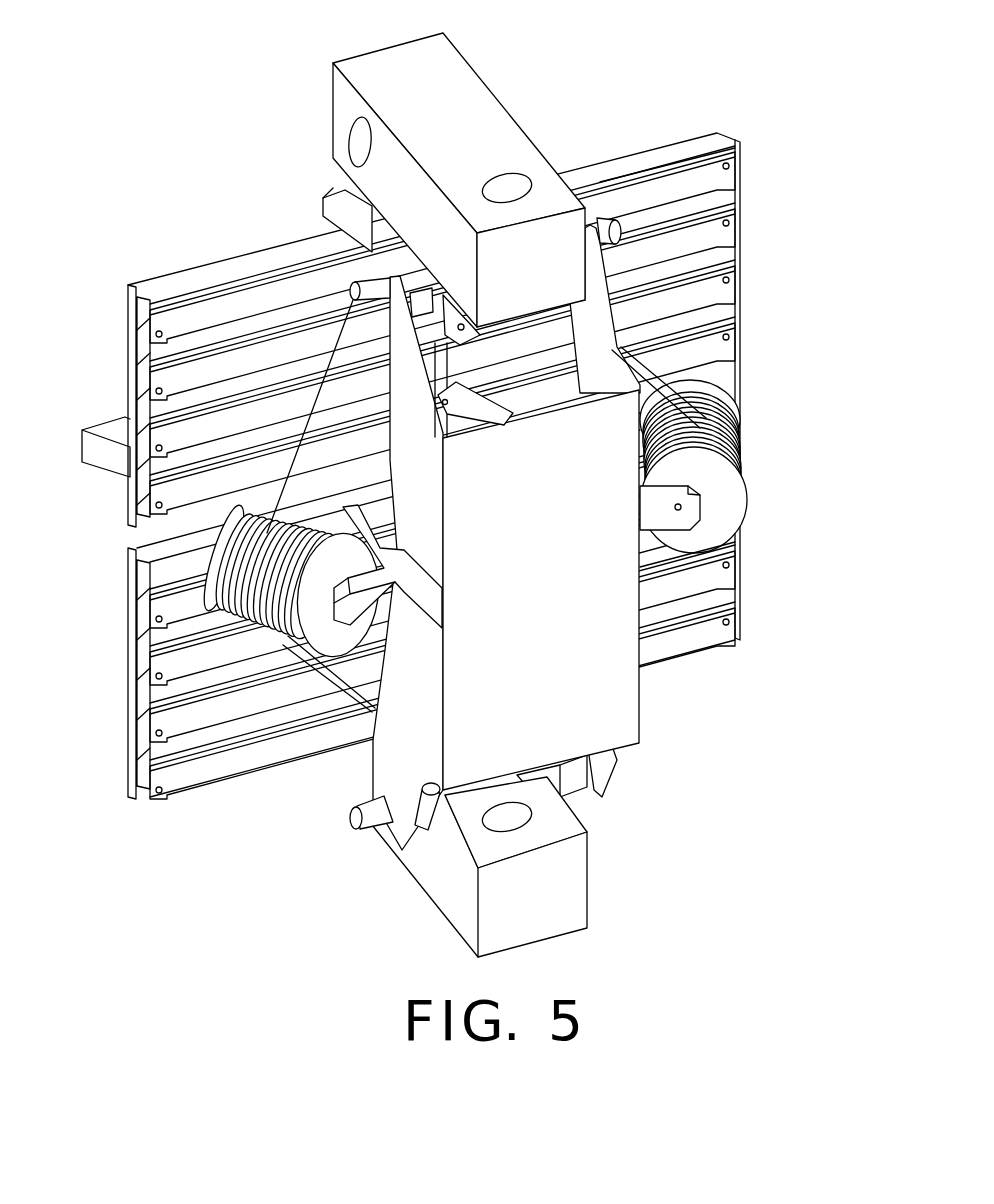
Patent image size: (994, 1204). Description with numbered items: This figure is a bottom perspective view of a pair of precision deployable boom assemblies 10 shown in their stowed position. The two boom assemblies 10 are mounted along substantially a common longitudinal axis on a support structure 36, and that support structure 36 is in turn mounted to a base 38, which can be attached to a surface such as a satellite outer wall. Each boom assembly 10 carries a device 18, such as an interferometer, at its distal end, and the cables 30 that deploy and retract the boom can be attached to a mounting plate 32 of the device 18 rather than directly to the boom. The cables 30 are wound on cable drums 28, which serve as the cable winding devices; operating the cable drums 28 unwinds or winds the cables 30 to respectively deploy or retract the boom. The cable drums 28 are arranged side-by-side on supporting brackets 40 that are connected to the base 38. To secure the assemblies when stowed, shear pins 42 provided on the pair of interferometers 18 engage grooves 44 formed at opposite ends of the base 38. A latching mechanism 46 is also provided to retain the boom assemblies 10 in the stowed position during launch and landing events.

The precision deployable boom assembly 10 is at (752, 265).
The device 18 is at (488, 100).
The cable drum 28 is at (745, 415).
The cable 30 is at (345, 298).
The mounting plate 32 is at (330, 177).
The support structure 36 is at (103, 462).
The base 38 is at (628, 713).
The supporting bracket 40 is at (373, 535).
The shear pin 42 is at (388, 286).
The groove 44 is at (380, 274).
The latching mechanism 46 is at (487, 332).